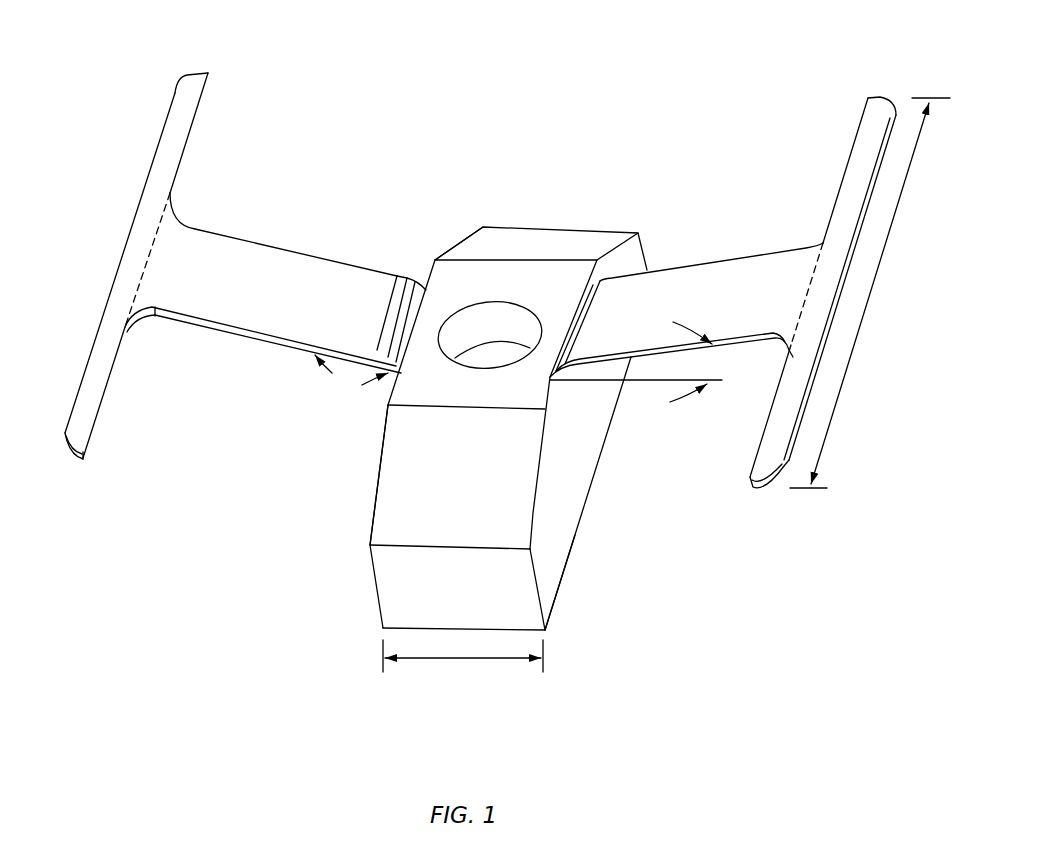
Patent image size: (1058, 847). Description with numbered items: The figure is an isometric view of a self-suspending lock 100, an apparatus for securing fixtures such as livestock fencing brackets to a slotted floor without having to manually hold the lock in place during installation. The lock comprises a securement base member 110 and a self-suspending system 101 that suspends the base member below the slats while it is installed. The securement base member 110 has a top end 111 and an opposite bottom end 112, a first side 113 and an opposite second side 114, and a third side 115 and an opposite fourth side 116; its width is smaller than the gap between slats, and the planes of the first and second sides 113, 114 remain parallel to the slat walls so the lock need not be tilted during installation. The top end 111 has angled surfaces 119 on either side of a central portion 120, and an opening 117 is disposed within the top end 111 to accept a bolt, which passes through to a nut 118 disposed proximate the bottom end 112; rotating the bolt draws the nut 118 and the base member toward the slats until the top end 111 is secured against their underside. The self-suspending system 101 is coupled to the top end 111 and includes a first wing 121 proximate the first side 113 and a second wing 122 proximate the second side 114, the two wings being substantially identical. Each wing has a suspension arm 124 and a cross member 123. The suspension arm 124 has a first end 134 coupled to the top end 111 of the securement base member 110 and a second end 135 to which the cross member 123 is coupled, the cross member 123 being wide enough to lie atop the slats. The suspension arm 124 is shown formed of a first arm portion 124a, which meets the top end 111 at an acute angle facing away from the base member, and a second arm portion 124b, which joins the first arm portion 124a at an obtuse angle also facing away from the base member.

The self-suspending lock 100 is at (523, 52).
The self-suspending system 101 is at (410, 175).
The securement base member 110 is at (267, 518).
The top end 111 is at (412, 382).
The bottom end 112 is at (595, 490).
The first side 113 is at (377, 475).
The second side 114 is at (567, 552).
The third side 115 is at (378, 592).
The fourth side 116 is at (562, 231).
The opening 117 is at (475, 335).
The nut 118 is at (467, 362).
The angled surfaces 119 is at (457, 250).
The central portion 120 is at (540, 398).
The first wing 121 is at (283, 234).
The second wing 122 is at (780, 249).
The cross member 123 is at (122, 261).
The suspension arm 124 is at (258, 325).
The first arm portion 124a is at (407, 278).
The second arm portion 124b is at (243, 247).
The first end 134 is at (410, 327).
The second end 135 is at (150, 265).